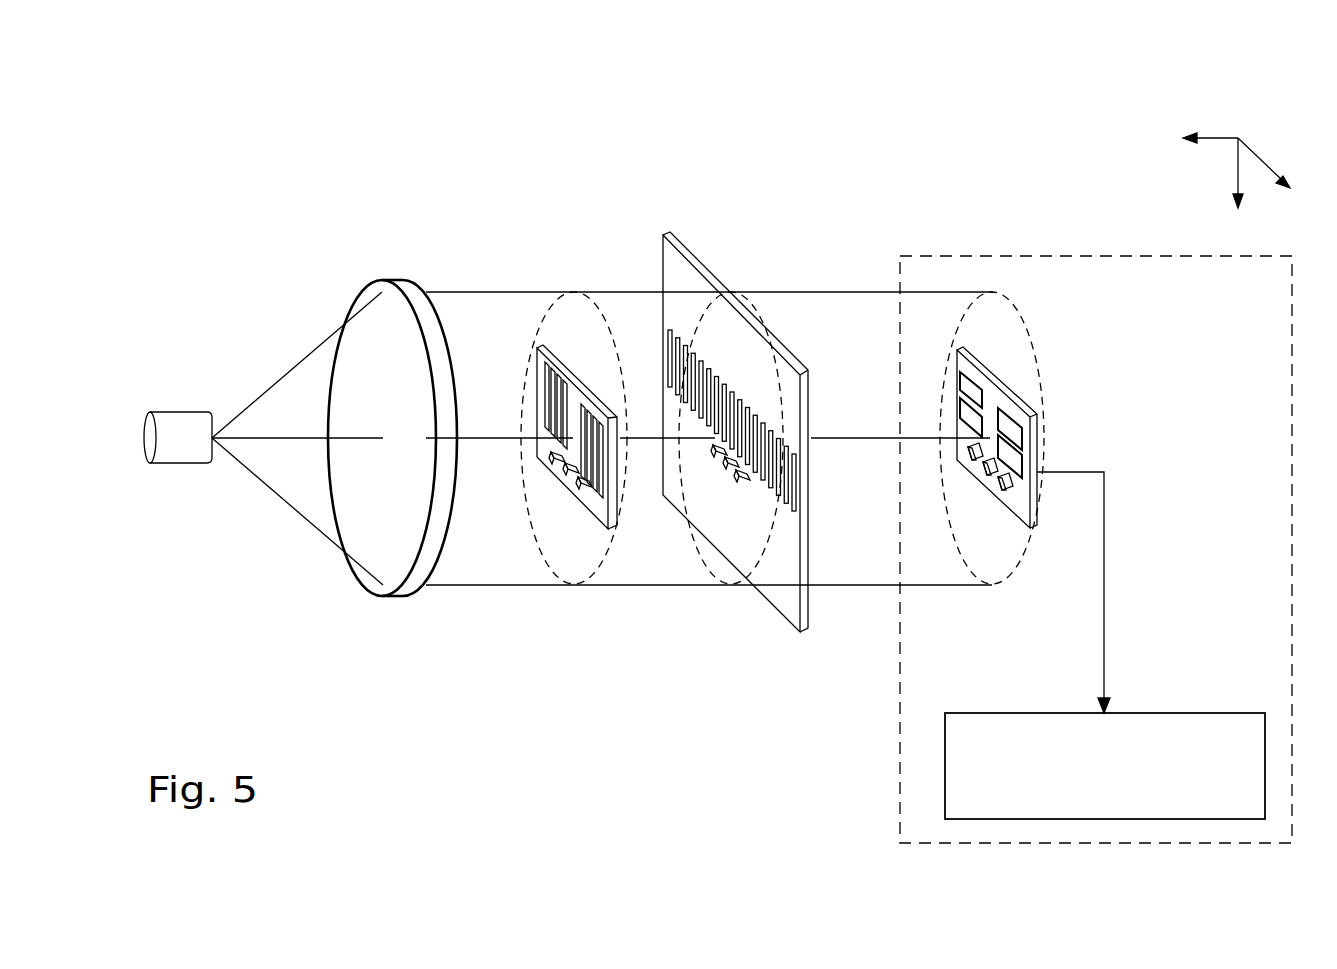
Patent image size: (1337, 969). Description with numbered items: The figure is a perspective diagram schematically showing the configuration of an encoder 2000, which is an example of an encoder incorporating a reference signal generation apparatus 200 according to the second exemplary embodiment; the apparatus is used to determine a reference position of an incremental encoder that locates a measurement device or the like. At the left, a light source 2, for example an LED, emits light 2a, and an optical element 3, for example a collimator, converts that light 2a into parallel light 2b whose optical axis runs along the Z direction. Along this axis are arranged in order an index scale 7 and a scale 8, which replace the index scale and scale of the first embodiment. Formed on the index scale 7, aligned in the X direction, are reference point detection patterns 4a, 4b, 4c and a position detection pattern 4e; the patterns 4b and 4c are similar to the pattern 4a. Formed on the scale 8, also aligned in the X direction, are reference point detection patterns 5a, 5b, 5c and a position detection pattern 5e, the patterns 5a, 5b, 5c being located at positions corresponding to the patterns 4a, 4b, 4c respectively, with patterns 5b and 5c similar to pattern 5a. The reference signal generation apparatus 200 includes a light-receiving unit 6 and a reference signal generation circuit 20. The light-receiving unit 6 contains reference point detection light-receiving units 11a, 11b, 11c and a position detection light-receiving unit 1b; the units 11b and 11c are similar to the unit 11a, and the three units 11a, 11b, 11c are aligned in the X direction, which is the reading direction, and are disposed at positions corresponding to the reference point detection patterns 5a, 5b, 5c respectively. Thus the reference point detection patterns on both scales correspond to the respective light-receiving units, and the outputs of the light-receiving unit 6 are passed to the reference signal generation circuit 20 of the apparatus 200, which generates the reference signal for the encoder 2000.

The encoder 2000 is at (762, 112).
The light source 2 is at (182, 412).
The light 2a is at (288, 508).
The parallel light 2b is at (442, 590).
The optical element 3 is at (388, 280).
The position detection pattern 4e is at (535, 347).
The reference point detection pattern 4a is at (552, 462).
The reference point detection pattern 4b is at (568, 473).
The reference point detection pattern 4c is at (580, 484).
The index scale 7 is at (560, 362).
The position detection pattern 5e is at (661, 318).
The reference point detection pattern 5a is at (716, 455).
The reference point detection pattern 5b is at (729, 467).
The reference point detection pattern 5c is at (745, 483).
The scale 8 is at (712, 275).
The light-receiving unit 6 is at (963, 350).
The position detection light-receiving unit 1b is at (957, 350).
The reference point detection light-receiving unit 11a is at (972, 463).
The reference point detection light-receiving unit 11b is at (988, 480).
The reference point detection light-receiving unit 11c is at (1003, 500).
The reference signal generation circuit 20 is at (945, 765).
The reference signal generation apparatus 200 is at (1070, 256).